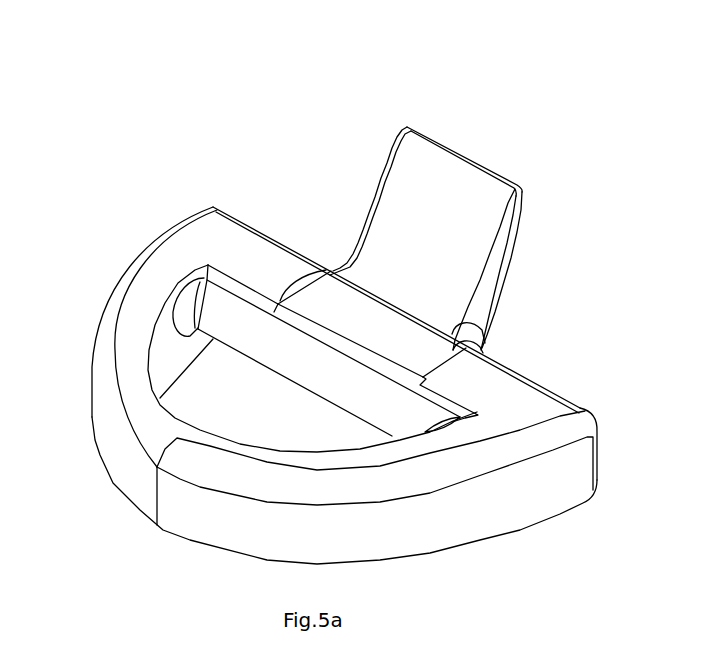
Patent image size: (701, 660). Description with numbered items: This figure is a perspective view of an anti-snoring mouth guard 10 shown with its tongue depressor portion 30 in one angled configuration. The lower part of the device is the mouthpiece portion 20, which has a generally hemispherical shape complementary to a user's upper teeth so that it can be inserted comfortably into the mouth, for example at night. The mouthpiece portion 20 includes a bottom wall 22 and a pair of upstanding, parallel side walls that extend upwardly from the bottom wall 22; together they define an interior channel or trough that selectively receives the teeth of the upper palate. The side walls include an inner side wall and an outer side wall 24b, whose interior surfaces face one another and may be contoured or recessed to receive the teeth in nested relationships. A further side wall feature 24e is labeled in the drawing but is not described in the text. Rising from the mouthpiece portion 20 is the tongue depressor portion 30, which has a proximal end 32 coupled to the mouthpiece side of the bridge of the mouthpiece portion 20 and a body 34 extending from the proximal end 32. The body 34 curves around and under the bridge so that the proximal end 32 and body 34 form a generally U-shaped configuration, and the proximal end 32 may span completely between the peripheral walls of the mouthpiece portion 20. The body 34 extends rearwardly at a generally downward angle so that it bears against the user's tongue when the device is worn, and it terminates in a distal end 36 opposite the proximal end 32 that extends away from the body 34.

The anti-snoring mouth guard 10 is at (156, 92).
The mouthpiece portion 20 is at (186, 590).
The bottom wall 22 is at (137, 333).
The outer side wall 24b is at (438, 532).
The curved retaining tab 24e is at (166, 340).
The tongue depressor portion 30 is at (556, 268).
The proximal end 32 is at (333, 305).
The body 34 is at (413, 174).
The distal end 36 is at (472, 158).